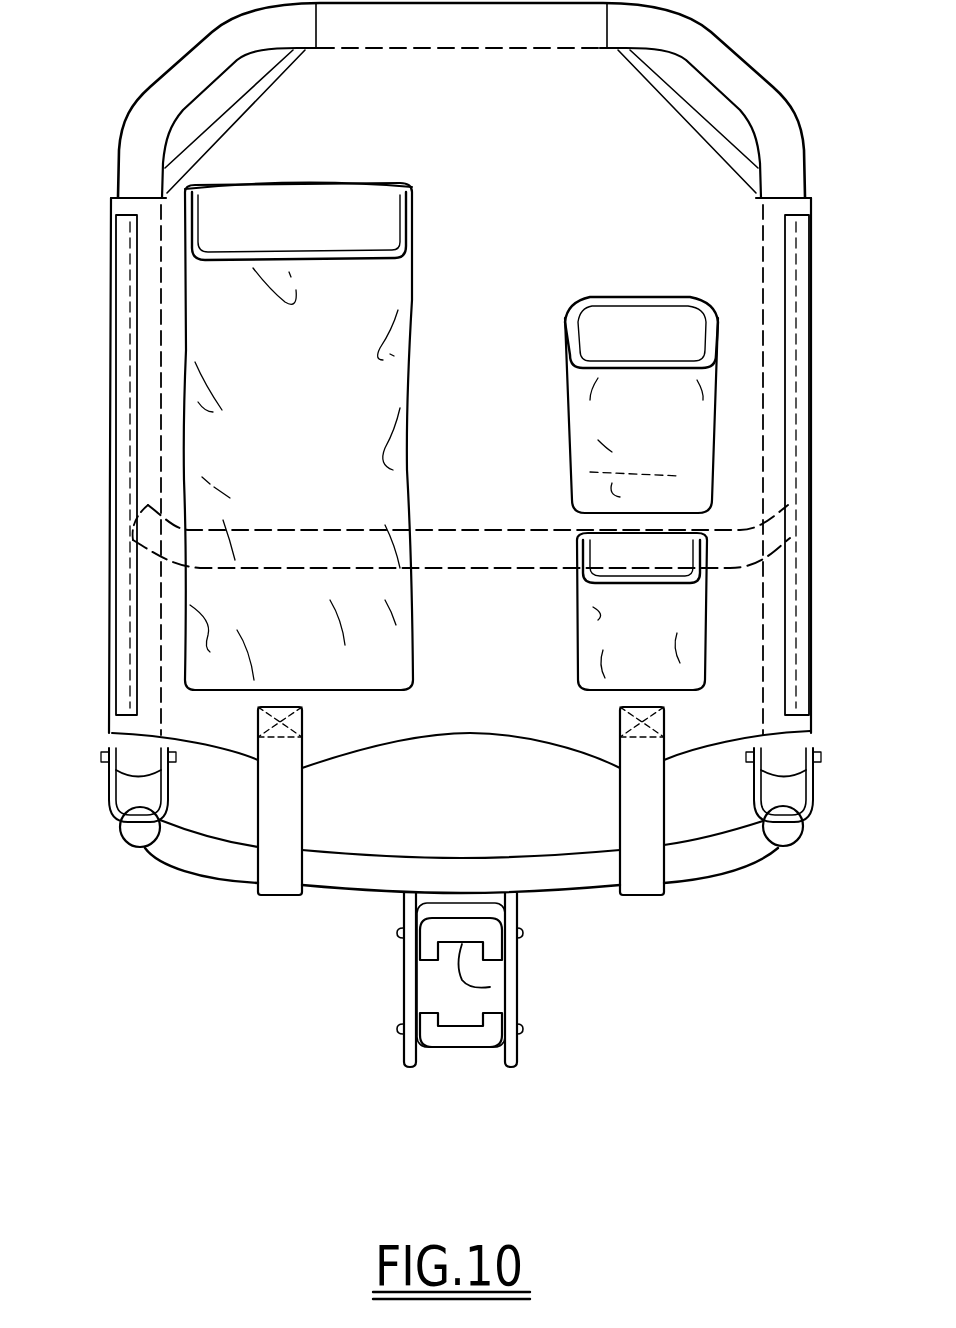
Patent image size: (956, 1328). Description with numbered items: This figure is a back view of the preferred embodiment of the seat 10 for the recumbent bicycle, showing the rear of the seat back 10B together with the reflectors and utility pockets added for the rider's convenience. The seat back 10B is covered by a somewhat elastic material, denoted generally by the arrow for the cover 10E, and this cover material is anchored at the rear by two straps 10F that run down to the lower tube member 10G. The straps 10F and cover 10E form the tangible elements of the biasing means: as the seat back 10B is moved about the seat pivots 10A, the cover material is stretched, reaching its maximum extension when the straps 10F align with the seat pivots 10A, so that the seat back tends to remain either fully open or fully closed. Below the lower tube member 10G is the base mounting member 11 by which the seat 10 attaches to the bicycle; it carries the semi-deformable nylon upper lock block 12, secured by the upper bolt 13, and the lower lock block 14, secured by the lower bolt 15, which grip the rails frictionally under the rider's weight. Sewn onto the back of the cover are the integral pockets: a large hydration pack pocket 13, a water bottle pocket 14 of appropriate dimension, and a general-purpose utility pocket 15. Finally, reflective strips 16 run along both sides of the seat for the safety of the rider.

The seat 10 is at (90, 172).
The seat pivots 10A is at (103, 756).
The seat back 10B is at (158, 93).
The cover 10E is at (680, 172).
The straps 10F is at (285, 875).
The lower tube member 10G is at (192, 853).
The base mounting member 11 is at (404, 970).
The upper lock block 12 is at (490, 987).
The hydration pack pocket 13 is at (313, 444).
The water bottle pocket 14 is at (653, 432).
The utility pocket 15 is at (653, 633).
The reflective strips 16 is at (120, 310).